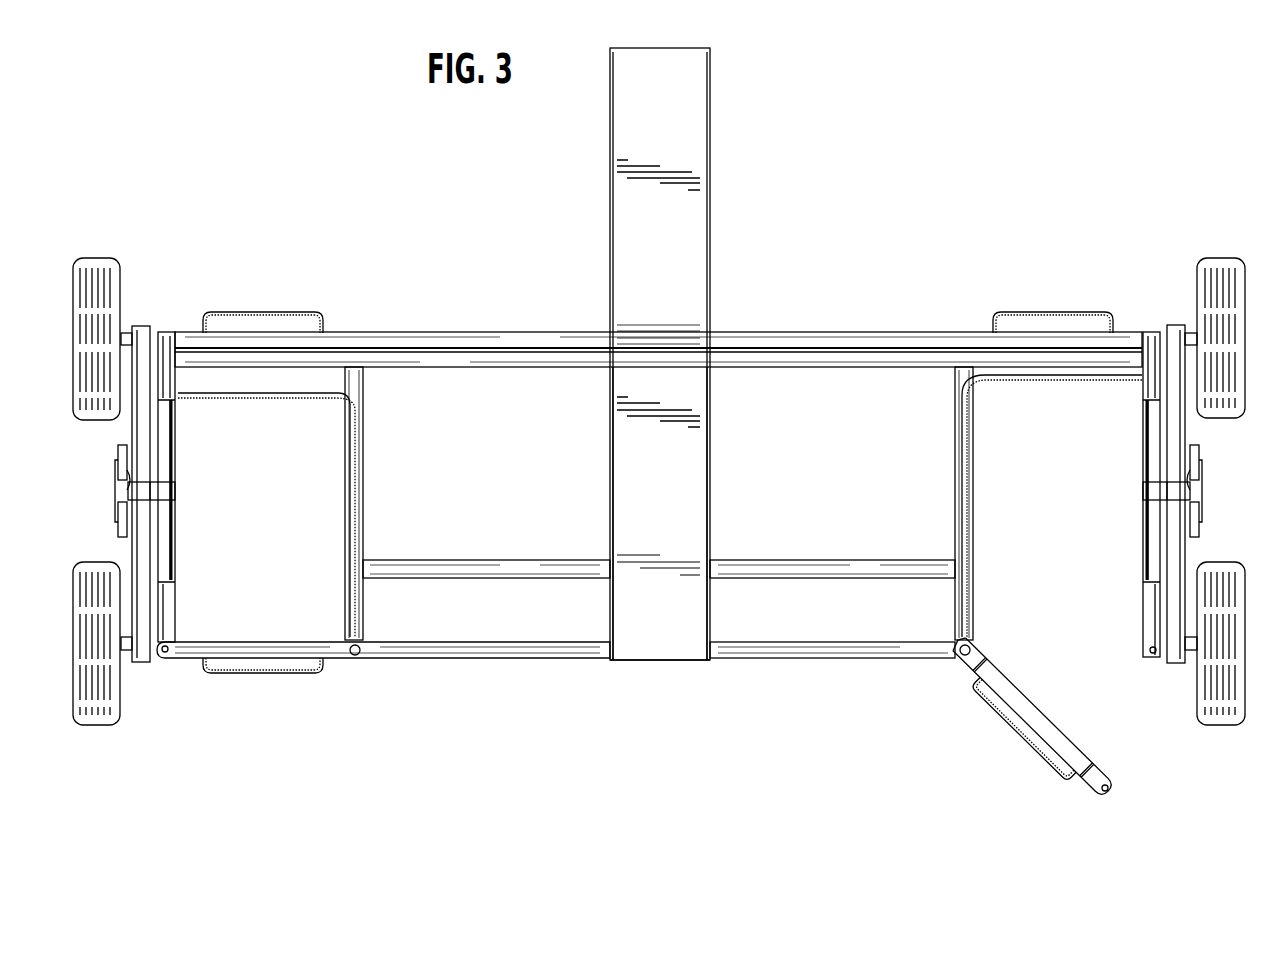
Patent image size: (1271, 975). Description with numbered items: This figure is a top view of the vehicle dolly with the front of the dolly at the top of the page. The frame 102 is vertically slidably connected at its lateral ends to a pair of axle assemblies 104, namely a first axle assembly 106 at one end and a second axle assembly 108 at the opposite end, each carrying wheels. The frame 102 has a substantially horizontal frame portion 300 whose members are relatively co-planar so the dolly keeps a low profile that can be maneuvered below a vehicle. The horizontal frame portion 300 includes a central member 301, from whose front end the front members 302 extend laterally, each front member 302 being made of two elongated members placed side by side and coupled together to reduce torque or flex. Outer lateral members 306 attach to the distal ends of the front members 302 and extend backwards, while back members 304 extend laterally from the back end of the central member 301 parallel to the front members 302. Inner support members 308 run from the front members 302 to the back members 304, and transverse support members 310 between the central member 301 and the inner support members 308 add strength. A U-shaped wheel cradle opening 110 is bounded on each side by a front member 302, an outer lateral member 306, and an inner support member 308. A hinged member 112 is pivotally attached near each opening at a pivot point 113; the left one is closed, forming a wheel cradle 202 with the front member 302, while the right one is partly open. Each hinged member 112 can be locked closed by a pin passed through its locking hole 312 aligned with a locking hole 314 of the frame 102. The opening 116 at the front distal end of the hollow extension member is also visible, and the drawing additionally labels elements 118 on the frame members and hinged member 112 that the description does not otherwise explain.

The frame 102 is at (688, 670).
The axle assemblies 104 is at (138, 325).
The first axle assembly 106 is at (138, 427).
The second axle assembly 108 is at (1187, 433).
The wheel cradle opening 110 is at (661, 506).
The hinged member 112 is at (193, 650).
The pivot point 113 is at (358, 660).
The opening 116 is at (723, 43).
The handle 118 is at (276, 312).
The wheel cradle 202 is at (293, 603).
The horizontal frame portion 300 is at (763, 322).
The central member 301 is at (692, 473).
The front member 302 is at (472, 338).
The back member 304 is at (523, 648).
The outer lateral member 306 is at (160, 608).
The inner support member 308 is at (358, 477).
The transverse support member 310 is at (473, 568).
The locking hole 312 is at (1112, 788).
The locking hole 314 is at (1153, 657).